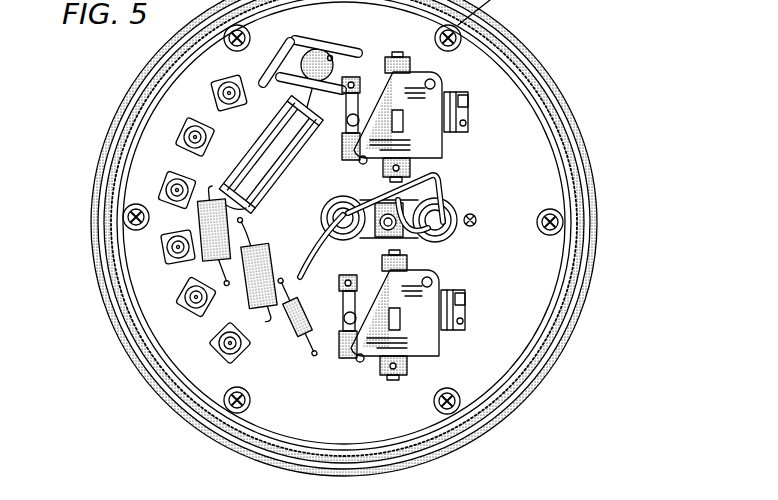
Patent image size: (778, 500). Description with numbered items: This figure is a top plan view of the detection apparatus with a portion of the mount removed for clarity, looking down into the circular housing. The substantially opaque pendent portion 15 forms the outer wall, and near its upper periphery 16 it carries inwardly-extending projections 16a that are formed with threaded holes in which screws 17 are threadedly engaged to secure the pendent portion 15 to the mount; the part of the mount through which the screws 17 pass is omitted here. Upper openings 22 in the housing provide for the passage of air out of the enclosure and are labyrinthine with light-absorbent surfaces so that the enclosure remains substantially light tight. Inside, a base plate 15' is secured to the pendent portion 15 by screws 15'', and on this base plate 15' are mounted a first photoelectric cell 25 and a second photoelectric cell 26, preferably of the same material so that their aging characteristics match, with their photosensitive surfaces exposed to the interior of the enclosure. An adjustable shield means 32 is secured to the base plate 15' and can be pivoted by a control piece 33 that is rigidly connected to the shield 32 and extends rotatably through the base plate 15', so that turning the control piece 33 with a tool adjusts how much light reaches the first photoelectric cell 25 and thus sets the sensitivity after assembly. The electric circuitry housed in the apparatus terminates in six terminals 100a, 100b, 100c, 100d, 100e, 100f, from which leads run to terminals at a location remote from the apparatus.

The pendent portion 15 is at (320, 238).
The base plate 15' is at (326, 223).
The screws 15'' is at (290, 330).
The upper periphery 16 is at (583, 284).
The inwardly-extending projections 16a is at (247, 430).
The screws 17 is at (250, 386).
The upper openings 22 is at (582, 248).
The first photoelectric cell 25 is at (447, 250).
The second photoelectric cell 26 is at (320, 217).
The adjustable shield means 32 is at (473, 213).
The control piece 33 is at (478, 229).
The terminal 100a is at (222, 353).
The terminal 100b is at (184, 298).
The terminal 100c is at (163, 245).
The terminal 100d is at (175, 178).
The terminal 100e is at (183, 124).
The terminal 100f is at (217, 84).